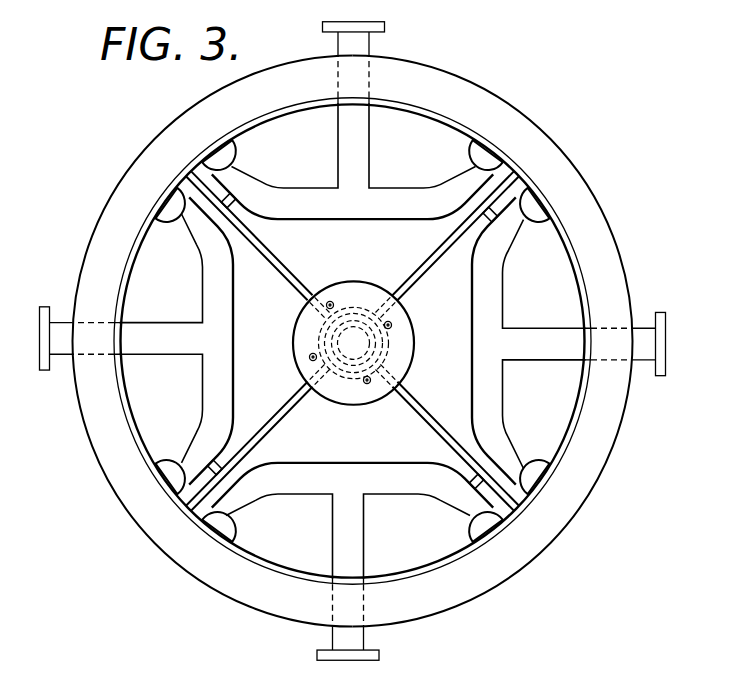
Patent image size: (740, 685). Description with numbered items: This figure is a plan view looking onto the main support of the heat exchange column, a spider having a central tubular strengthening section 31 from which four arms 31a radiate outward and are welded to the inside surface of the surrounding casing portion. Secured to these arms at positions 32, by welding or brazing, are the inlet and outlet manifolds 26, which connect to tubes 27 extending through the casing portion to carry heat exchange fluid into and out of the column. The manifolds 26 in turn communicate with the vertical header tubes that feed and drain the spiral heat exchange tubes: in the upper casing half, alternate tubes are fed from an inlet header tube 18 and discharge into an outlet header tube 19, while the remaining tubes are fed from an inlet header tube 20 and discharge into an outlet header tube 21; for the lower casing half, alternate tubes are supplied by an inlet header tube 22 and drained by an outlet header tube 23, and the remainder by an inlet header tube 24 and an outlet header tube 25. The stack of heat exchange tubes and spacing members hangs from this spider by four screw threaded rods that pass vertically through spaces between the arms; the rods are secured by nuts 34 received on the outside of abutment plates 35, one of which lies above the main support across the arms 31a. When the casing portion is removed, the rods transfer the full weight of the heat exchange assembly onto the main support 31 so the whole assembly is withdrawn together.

The inlet header tube 18 is at (194, 132).
The outlet header tube 19 is at (352, 374).
The inlet header tube 20 is at (511, 125).
The outlet header tube 21 is at (187, 553).
The inlet header tube 22 is at (493, 484).
The outlet header tube 23 is at (213, 198).
The inlet header tube 24 is at (493, 198).
The outlet header tube 25 is at (202, 484).
The inlet and outlet manifolds 26 is at (353, 340).
The tubes 27 is at (359, 334).
The central tubular strengthening section 31 is at (378, 341).
The arms 31a is at (352, 341).
The positions 32 is at (353, 341).
The nuts 34 is at (322, 342).
The abutment plates 35 is at (353, 330).